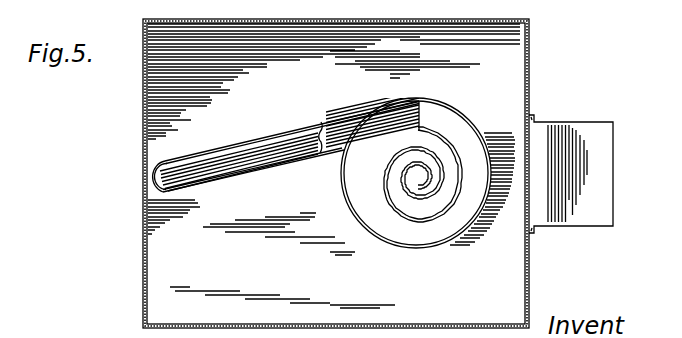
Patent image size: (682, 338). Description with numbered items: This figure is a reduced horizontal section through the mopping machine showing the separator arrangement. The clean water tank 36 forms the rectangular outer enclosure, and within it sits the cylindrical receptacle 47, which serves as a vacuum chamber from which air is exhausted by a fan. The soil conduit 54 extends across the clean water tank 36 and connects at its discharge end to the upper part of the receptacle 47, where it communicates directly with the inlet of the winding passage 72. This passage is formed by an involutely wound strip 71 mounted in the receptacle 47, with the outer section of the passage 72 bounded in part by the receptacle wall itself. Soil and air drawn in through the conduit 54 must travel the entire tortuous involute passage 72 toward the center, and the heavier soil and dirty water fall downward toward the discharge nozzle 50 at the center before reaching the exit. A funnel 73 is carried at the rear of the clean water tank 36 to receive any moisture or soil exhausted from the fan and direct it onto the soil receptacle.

The clean water tank 36 is at (530, 81).
The cylindrical receptacle 47 is at (448, 102).
The discharge nozzle 50 is at (425, 173).
The conduit 54 is at (273, 131).
The involutely wound strip 71 is at (450, 165).
The winding passage 72 is at (452, 174).
The funnel 73 is at (605, 174).